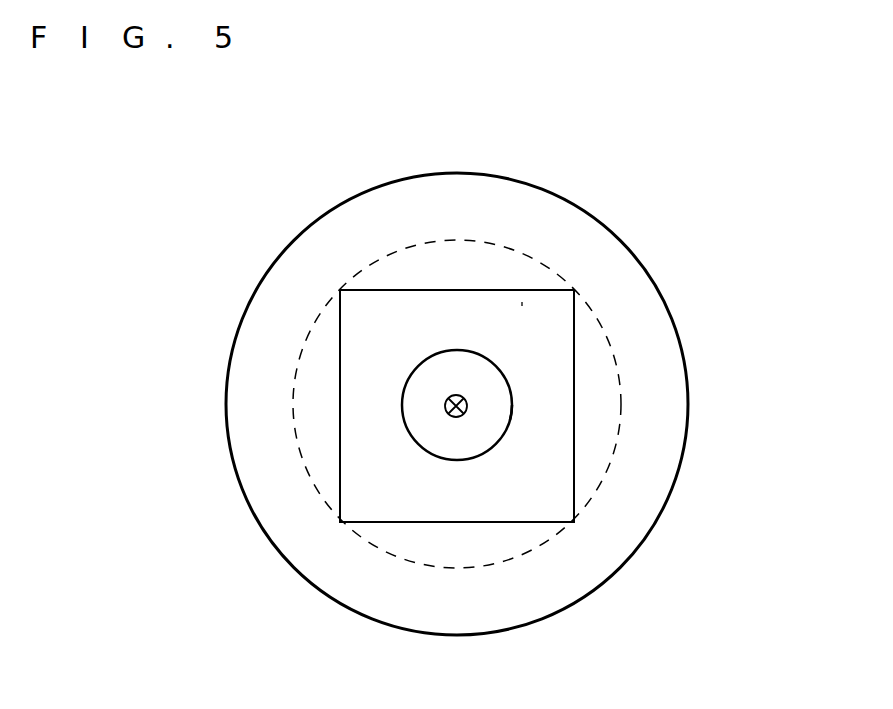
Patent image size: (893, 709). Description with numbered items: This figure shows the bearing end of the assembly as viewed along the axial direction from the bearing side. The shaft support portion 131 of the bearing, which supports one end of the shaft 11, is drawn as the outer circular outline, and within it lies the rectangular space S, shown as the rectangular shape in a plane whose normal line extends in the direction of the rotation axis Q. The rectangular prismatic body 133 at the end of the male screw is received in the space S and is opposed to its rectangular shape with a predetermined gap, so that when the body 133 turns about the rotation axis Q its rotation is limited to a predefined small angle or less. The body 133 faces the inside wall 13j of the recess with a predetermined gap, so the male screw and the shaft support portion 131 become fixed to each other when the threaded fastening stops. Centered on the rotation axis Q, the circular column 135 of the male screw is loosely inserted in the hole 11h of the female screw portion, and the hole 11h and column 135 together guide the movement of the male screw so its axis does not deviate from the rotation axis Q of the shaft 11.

The shaft 11 is at (318, 317).
The hole 11h is at (411, 432).
The shaft support portion 131 is at (330, 605).
The rectangular prismatic body 133 is at (575, 357).
The circular column 135 is at (513, 408).
The inside wall 13j is at (393, 522).
The space S is at (522, 302).
The rotation axis Q is at (446, 401).